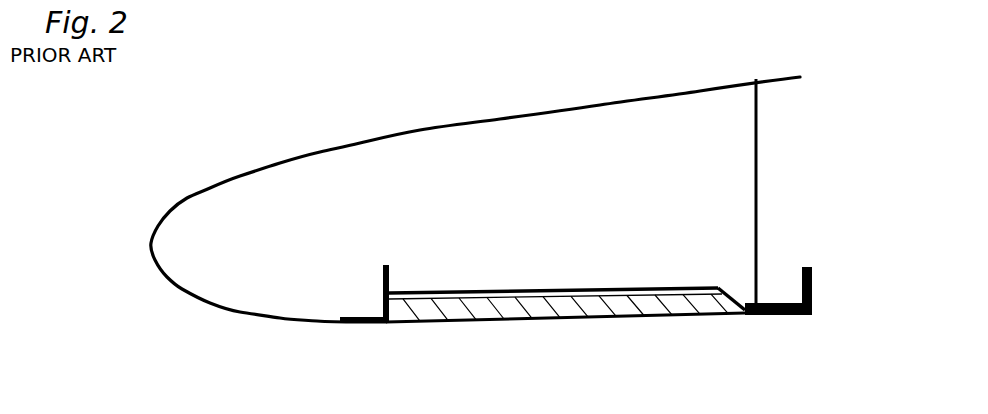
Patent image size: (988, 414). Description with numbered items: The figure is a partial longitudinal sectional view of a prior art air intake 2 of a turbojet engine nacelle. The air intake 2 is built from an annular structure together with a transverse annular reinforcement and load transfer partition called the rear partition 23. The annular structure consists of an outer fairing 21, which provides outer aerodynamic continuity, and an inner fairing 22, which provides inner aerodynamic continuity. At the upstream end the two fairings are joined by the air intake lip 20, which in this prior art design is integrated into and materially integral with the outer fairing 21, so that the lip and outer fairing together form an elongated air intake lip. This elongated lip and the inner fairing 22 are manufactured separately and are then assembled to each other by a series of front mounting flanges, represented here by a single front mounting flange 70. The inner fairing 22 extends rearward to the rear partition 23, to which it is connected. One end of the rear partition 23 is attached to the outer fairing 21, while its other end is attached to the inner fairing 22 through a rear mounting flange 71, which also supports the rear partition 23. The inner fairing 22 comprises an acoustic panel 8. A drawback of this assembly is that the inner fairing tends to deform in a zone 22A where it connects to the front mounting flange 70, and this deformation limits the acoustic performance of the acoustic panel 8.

The air intake 2 is at (235, 122).
The air intake lip 20 is at (183, 199).
The outer fairing 21 is at (466, 121).
The rear partition 23 is at (759, 169).
The front mounting flange 70 is at (381, 283).
The rear mounting flange 71 is at (814, 274).
The inner fairing 22 is at (543, 293).
The zone connecting the inner fairing to the front mounting flange 22A is at (405, 290).
The acoustic panel 8 is at (457, 343).